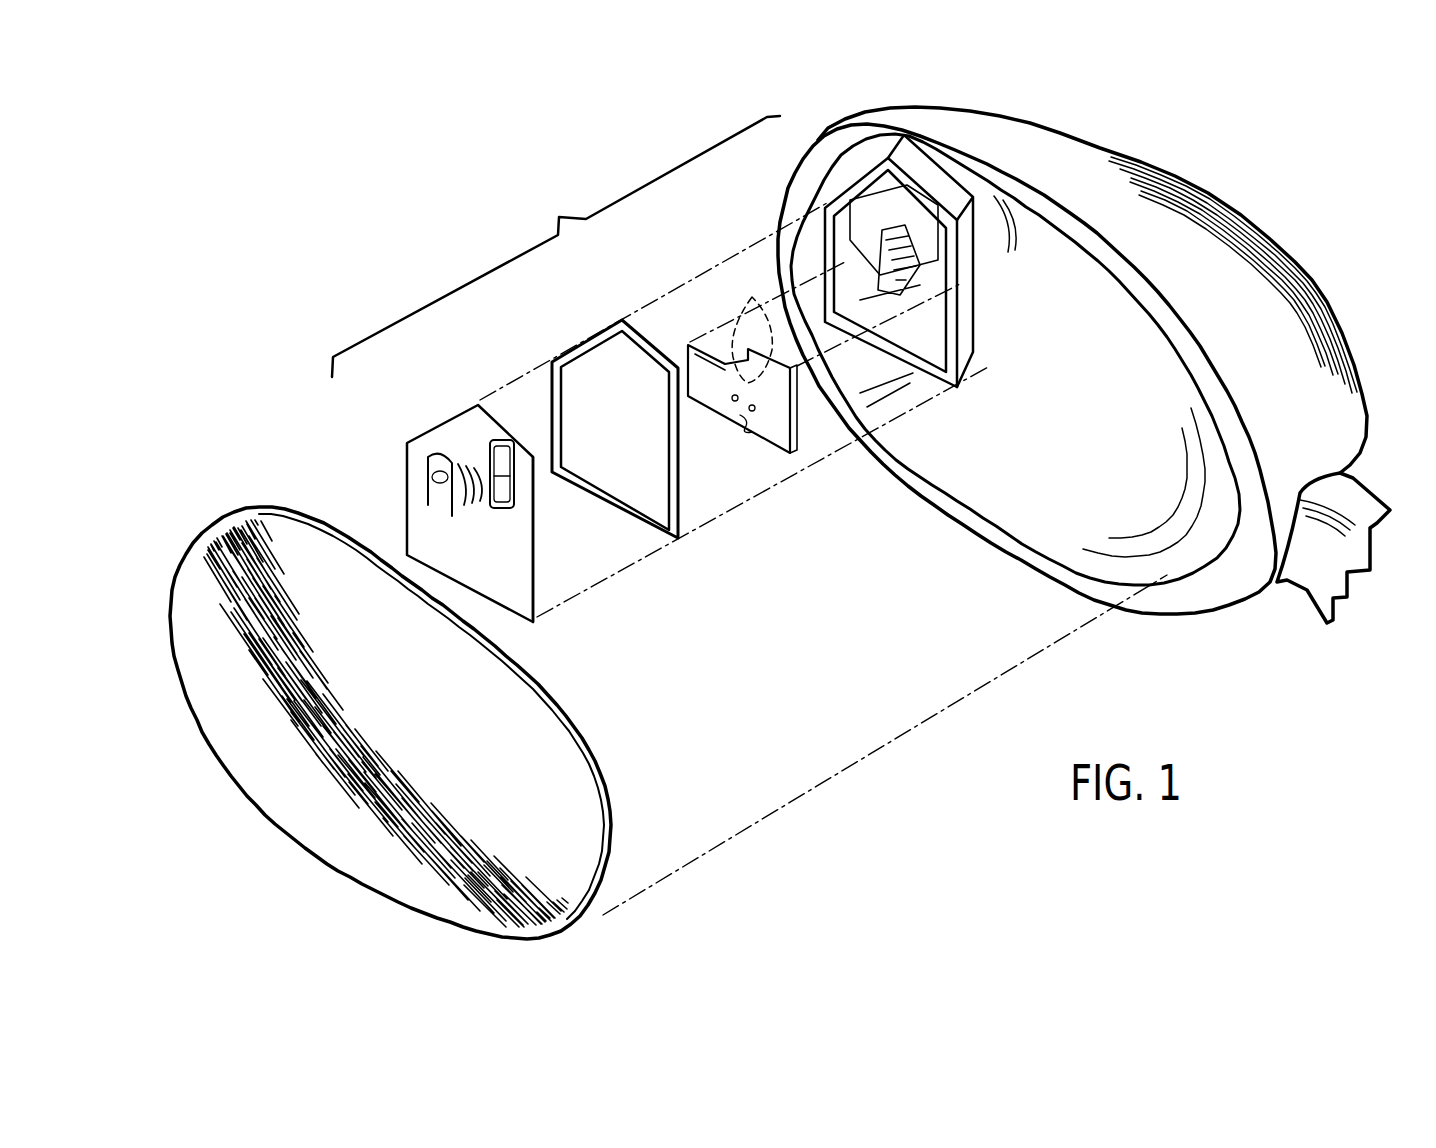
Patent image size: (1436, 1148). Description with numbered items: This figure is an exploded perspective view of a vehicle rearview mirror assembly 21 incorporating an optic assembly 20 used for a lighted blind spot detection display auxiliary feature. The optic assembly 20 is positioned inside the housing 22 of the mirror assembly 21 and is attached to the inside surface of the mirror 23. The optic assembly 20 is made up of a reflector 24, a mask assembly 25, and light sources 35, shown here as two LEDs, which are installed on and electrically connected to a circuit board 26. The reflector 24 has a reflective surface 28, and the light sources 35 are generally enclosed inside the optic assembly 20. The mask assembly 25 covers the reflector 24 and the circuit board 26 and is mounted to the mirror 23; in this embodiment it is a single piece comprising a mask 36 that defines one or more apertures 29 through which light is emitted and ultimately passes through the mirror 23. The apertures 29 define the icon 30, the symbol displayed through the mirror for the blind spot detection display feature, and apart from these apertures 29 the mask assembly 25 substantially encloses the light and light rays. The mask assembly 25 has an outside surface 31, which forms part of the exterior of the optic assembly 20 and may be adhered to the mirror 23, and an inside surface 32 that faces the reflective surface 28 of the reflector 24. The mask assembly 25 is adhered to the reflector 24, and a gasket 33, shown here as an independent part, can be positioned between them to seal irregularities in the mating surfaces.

The optic assembly 20 is at (556, 246).
The mirror assembly 21 is at (1041, 150).
The housing 22 is at (1253, 300).
The mirror 23 is at (285, 771).
The reflector 24 is at (969, 315).
The mask assembly 25 is at (460, 509).
The circuit board 26 is at (778, 430).
The reflective surface 28 is at (913, 203).
The aperture 29 is at (503, 440).
The icon 30 is at (488, 520).
The outside surface 31 is at (510, 613).
The inside surface 32 is at (533, 582).
The gasket 33 is at (590, 342).
The light source 35 is at (751, 305).
The mask 36 is at (458, 564).